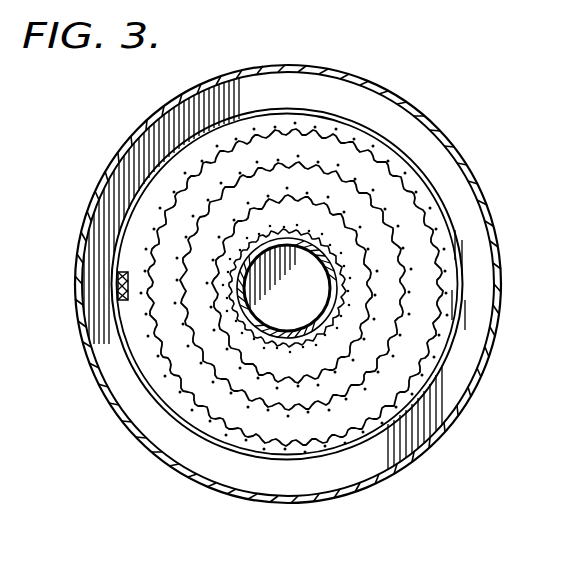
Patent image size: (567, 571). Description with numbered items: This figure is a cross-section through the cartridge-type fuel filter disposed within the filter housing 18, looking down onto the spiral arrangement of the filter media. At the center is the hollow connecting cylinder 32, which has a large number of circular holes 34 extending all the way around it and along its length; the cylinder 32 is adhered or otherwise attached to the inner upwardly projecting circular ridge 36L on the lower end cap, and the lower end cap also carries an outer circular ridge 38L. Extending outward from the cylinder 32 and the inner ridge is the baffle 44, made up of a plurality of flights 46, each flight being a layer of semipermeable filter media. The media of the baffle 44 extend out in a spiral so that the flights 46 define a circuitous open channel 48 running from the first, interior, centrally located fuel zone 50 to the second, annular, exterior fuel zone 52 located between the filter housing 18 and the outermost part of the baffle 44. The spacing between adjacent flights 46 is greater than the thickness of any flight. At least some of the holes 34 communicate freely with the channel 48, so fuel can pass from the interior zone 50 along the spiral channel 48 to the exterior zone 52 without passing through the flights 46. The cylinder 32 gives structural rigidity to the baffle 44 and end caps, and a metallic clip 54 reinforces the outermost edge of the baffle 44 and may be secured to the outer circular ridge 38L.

The filter housing 18 is at (320, 506).
The hollow connecting cylinder 32 is at (233, 262).
The circular holes 34 is at (243, 290).
The inner upwardly projecting circular ridge 36L is at (311, 290).
The outer circular ridge 38L is at (154, 406).
The baffle 44 is at (418, 376).
The flights 46 is at (440, 228).
The circuitous open channel 48 is at (287, 170).
The interior fuel zone 50 is at (287, 312).
The exterior fuel zone 52 is at (203, 457).
The metallic clip 54 is at (128, 300).